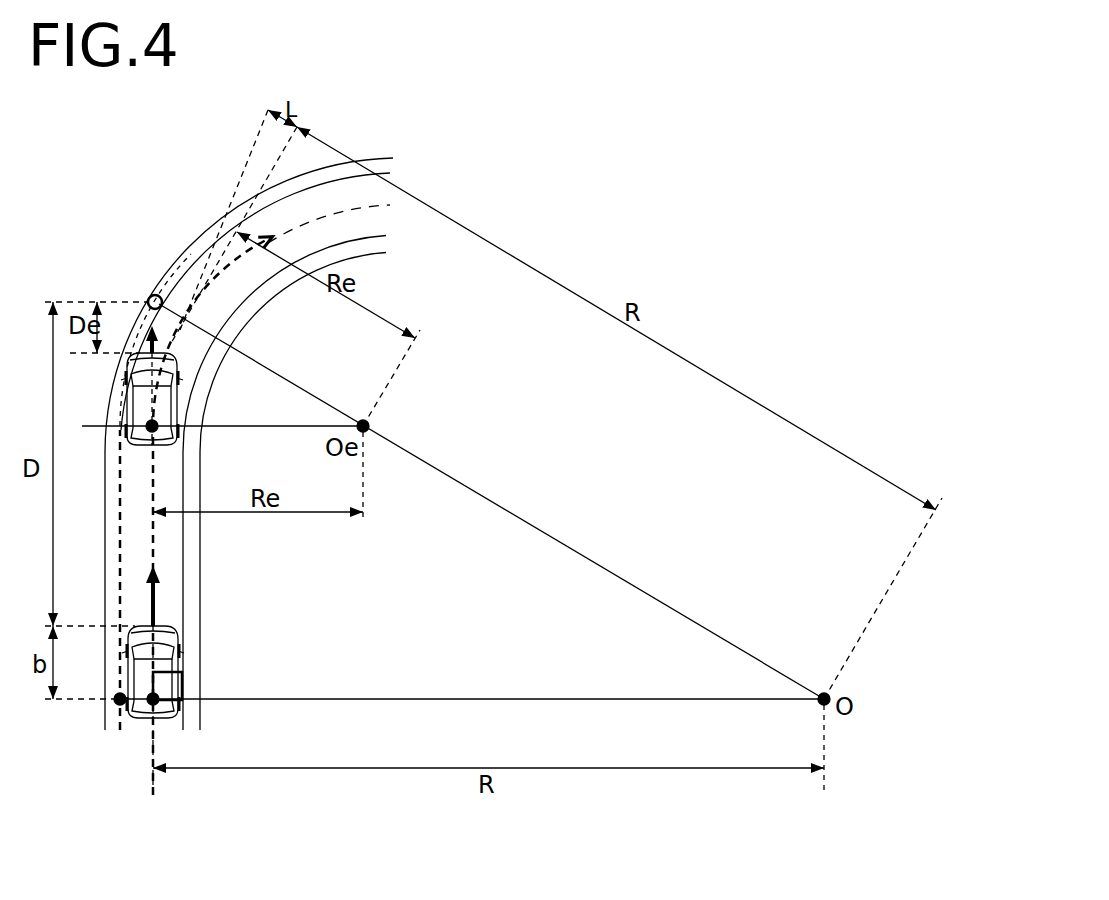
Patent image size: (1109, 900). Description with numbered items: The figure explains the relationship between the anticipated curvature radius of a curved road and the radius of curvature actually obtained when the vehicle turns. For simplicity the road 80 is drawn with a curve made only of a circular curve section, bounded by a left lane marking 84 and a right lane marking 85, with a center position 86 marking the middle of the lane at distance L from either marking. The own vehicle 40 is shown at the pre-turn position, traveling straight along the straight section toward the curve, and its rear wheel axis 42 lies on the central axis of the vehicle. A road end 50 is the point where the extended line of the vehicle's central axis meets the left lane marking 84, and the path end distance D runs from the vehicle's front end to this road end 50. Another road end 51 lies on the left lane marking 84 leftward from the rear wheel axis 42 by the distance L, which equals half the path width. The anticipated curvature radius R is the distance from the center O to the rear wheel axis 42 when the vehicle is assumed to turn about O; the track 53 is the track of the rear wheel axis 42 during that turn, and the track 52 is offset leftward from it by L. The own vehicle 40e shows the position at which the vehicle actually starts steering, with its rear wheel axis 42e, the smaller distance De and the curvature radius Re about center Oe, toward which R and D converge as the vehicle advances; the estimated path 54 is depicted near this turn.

The own vehicle 40 is at (133, 720).
The own vehicle at turn start position 40e is at (129, 452).
The rear wheel axis 42 is at (151, 708).
The rear wheel axis of own vehicle at turn start 42e is at (151, 432).
The road end 50 is at (150, 297).
The road end 51 is at (116, 703).
The track 52 is at (120, 552).
The track 53 is at (155, 541).
The estimated travel path 54 is at (236, 246).
The road 80 is at (370, 158).
The left lane marking 84 is at (388, 173).
The right lane marking 85 is at (386, 244).
The center position 86 is at (388, 206).